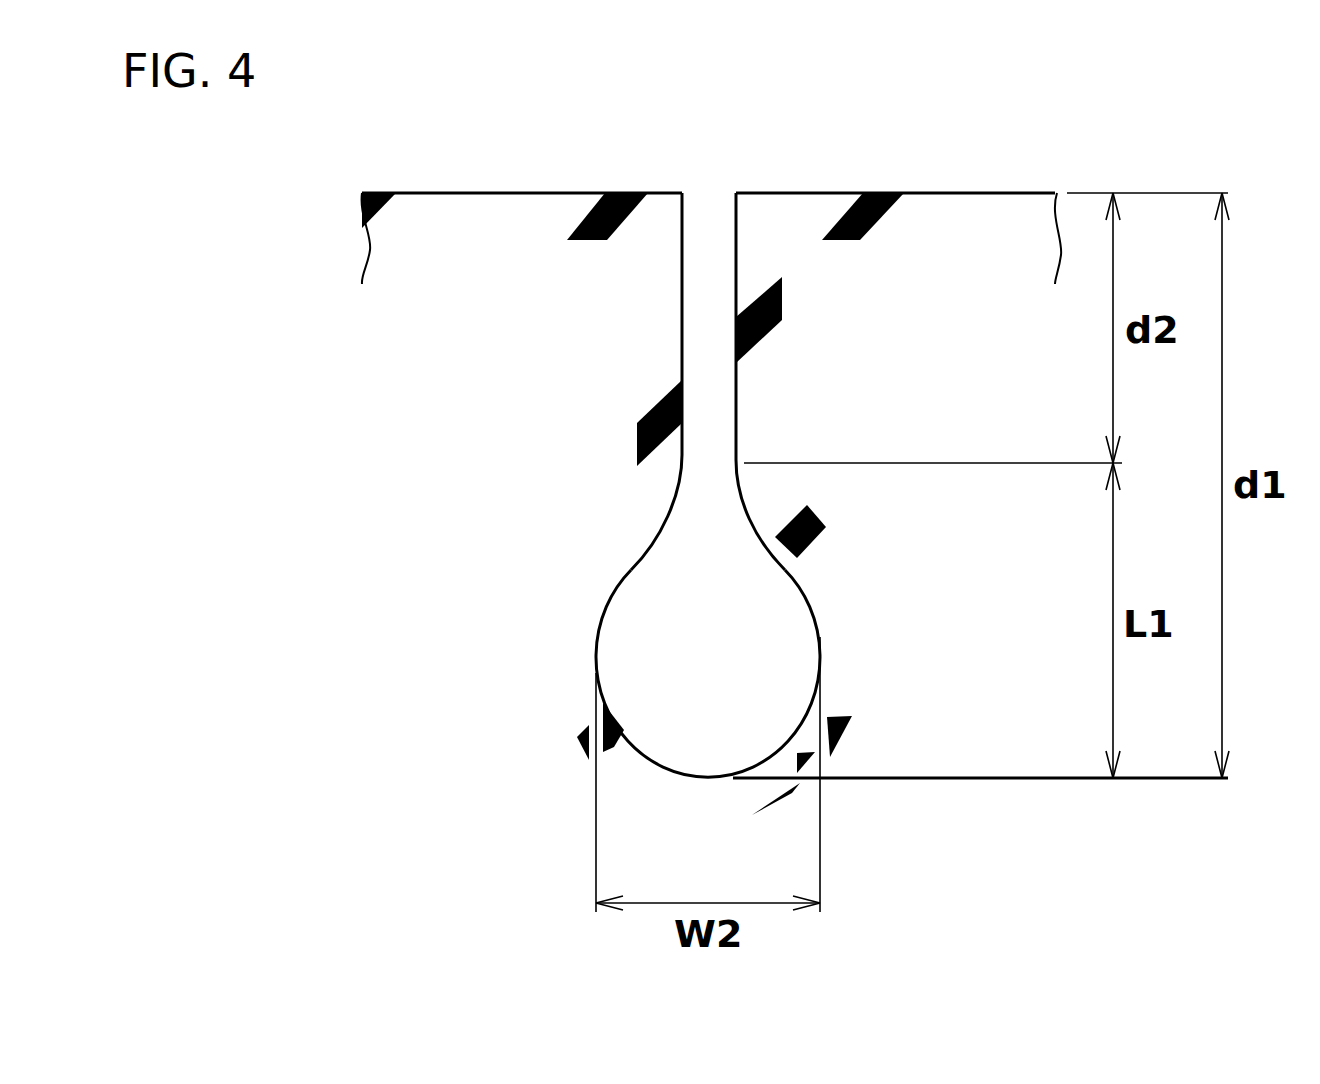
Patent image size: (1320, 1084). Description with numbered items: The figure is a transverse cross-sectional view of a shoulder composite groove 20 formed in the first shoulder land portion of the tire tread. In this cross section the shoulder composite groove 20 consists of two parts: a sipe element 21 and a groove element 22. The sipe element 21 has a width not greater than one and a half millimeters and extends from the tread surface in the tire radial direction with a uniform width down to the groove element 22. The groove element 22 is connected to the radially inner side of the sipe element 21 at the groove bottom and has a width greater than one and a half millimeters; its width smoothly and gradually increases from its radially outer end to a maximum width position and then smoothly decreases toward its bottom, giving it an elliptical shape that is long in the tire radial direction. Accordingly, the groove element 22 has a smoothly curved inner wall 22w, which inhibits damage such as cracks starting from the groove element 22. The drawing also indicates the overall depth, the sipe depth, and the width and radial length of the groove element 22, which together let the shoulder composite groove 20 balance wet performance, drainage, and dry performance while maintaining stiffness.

The shoulder composite groove 20 is at (442, 320).
The sipe element 21 is at (707, 349).
The groove element 22 is at (710, 580).
The inner wall 22w is at (608, 570).